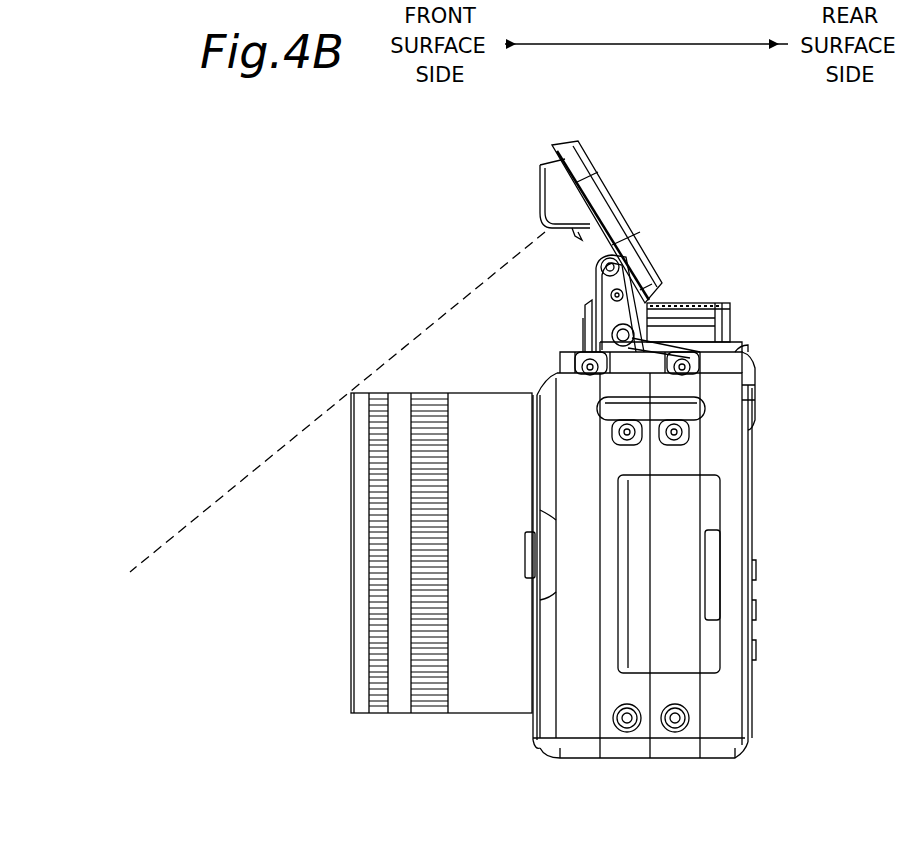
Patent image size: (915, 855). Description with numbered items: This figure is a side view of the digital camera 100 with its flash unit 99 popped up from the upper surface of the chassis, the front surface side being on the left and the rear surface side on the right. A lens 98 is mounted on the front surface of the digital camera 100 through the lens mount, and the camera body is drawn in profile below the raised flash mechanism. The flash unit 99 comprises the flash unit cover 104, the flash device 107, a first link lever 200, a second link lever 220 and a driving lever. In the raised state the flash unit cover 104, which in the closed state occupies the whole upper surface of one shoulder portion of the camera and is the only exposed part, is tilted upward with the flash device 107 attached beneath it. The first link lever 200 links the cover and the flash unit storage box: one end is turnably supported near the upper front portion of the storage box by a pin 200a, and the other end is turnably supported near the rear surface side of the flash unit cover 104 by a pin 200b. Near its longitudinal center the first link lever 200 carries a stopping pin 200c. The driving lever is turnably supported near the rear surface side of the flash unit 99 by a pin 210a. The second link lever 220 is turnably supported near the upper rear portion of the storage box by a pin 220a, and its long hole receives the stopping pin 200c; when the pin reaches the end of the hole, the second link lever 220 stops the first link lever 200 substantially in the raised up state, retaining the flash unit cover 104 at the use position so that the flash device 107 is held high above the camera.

The lens 98 is at (477, 698).
The flash unit 99 is at (453, 117).
The digital camera 100 is at (781, 188).
The flash unit cover 104 is at (587, 162).
The flash device 107 is at (560, 193).
The first link lever 200 is at (600, 320).
The pin 200a is at (592, 365).
The pin 200b is at (614, 262).
The stopping pin 200c is at (630, 333).
The pin 210a is at (620, 293).
The second link lever 220 is at (655, 324).
The pin 220a is at (693, 372).